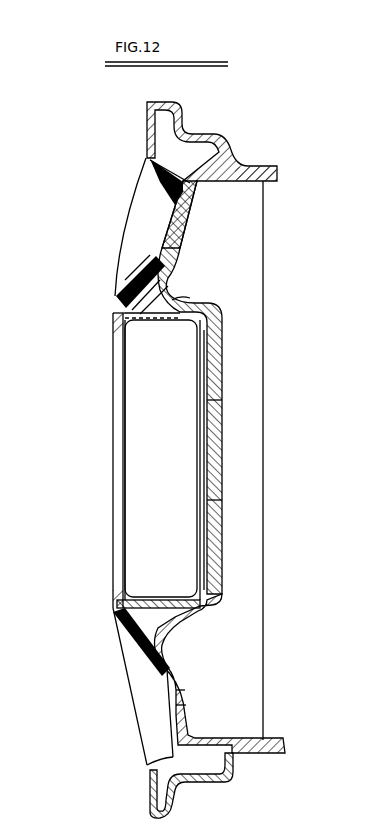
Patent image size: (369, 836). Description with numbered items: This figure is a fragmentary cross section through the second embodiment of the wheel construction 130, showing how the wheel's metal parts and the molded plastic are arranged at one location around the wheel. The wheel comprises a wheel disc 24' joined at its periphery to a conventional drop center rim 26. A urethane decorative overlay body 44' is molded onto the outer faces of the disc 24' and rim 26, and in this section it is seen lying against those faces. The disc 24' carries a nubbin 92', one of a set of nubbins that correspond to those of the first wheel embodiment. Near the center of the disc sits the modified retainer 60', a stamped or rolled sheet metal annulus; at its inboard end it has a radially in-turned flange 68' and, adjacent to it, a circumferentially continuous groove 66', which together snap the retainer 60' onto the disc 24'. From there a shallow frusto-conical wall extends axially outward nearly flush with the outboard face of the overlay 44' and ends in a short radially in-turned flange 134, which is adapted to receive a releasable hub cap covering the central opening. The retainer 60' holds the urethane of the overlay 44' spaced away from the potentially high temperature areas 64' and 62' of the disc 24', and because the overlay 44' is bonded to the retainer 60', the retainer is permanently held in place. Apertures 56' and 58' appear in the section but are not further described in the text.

The wheel construction 130 is at (138, 130).
The drop center rim 26 is at (247, 164).
The wheel disc 24' is at (230, 387).
The decorative overlay body 44' is at (107, 236).
The nubbin 92' is at (198, 287).
The groove 66' is at (152, 341).
The high temperature area 64' is at (251, 460).
The radially in-turned flange 68' is at (162, 458).
The retainer 60' is at (86, 460).
The radially in-turned flange 134 is at (127, 603).
The high temperature area 62' is at (179, 613).
The shoulder 58' is at (220, 673).
The bearing inner race 56' is at (204, 698).